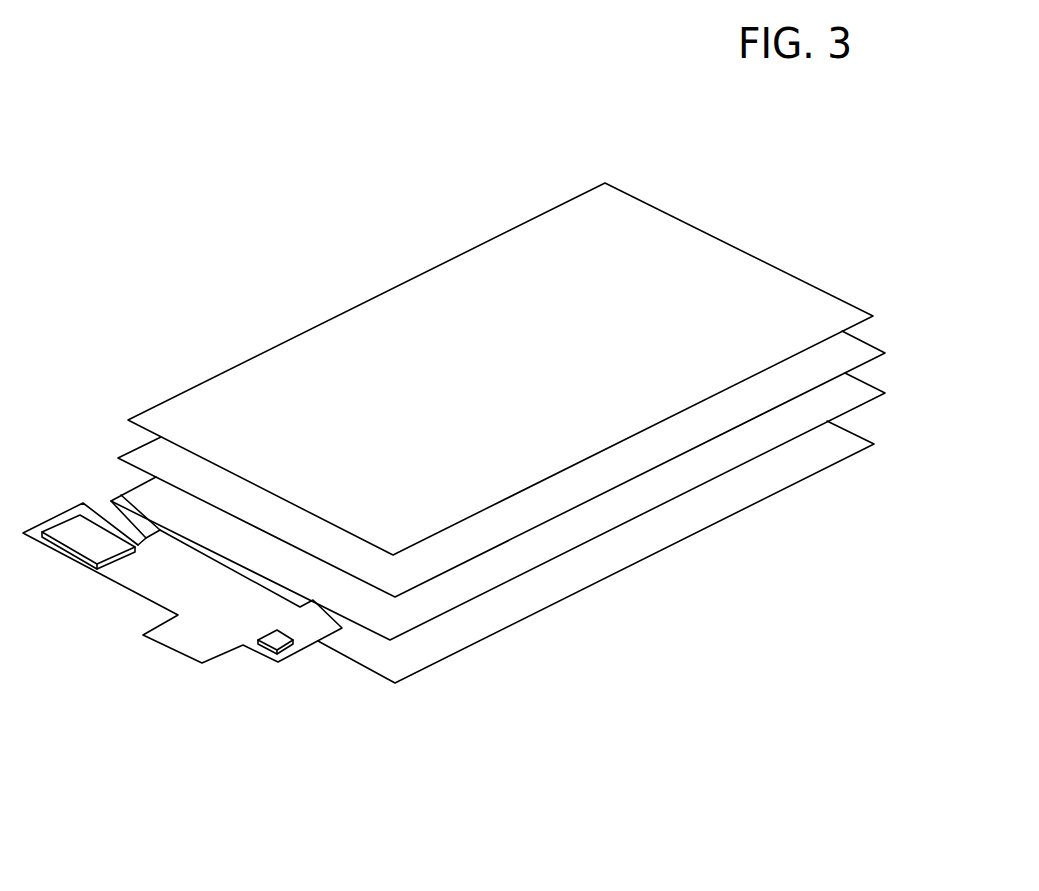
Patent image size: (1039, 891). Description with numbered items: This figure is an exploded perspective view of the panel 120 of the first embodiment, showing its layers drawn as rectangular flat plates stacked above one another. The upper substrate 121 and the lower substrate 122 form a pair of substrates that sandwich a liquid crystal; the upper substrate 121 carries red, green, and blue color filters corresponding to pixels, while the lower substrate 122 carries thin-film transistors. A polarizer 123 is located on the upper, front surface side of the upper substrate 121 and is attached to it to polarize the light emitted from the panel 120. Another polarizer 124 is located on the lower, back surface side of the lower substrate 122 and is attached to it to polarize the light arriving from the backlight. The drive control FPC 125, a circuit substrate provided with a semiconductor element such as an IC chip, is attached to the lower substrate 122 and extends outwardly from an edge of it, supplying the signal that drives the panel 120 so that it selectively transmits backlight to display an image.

The panel 120 is at (455, 150).
The upper substrate 121 is at (450, 570).
The lower substrate 122 is at (552, 560).
The polarizer 123 is at (602, 450).
The polarizer 124 is at (825, 470).
The drive control FPC 125 is at (170, 650).